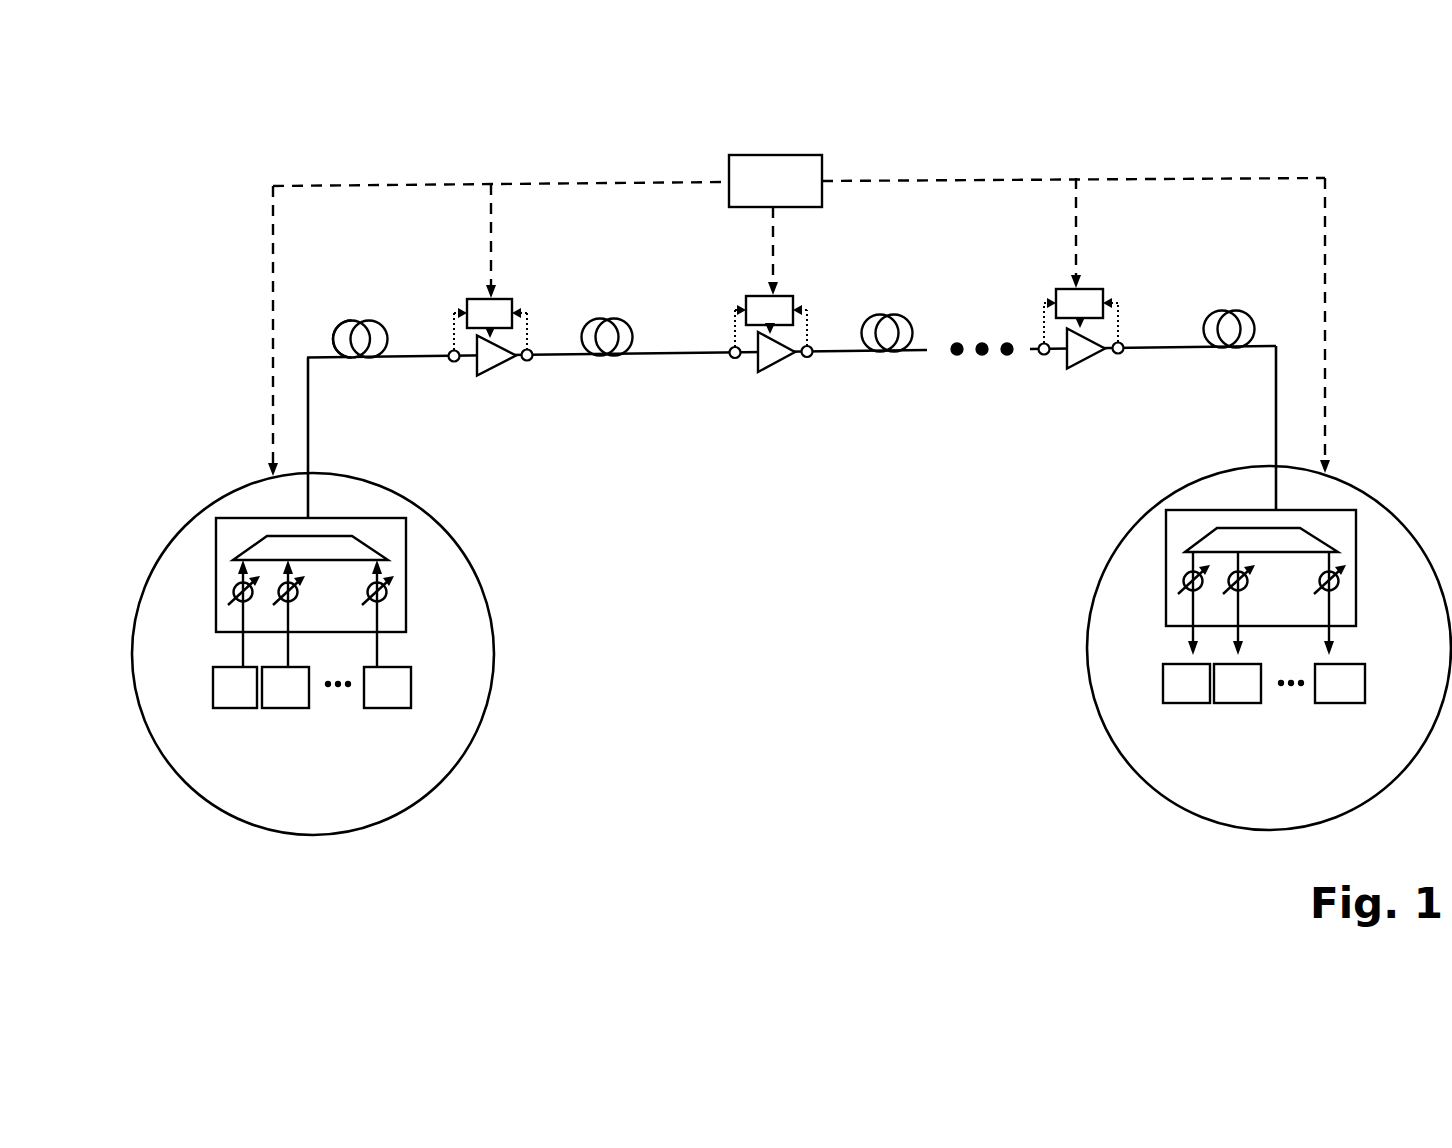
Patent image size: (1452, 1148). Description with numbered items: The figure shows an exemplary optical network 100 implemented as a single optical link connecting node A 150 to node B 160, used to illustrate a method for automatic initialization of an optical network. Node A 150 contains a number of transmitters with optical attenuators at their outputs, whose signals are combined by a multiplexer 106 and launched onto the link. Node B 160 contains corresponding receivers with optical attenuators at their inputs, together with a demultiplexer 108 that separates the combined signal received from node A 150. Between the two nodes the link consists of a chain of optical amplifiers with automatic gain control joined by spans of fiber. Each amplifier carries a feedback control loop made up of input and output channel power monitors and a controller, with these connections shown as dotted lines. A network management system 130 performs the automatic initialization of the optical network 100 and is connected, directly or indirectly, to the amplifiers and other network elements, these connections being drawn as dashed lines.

The optical network 100 is at (1163, 125).
The multiplexer 106 is at (235, 562).
The demultiplexer 108 is at (1345, 557).
The network management system 130 is at (773, 155).
The node A 150 is at (469, 752).
The node B 160 is at (1106, 733).